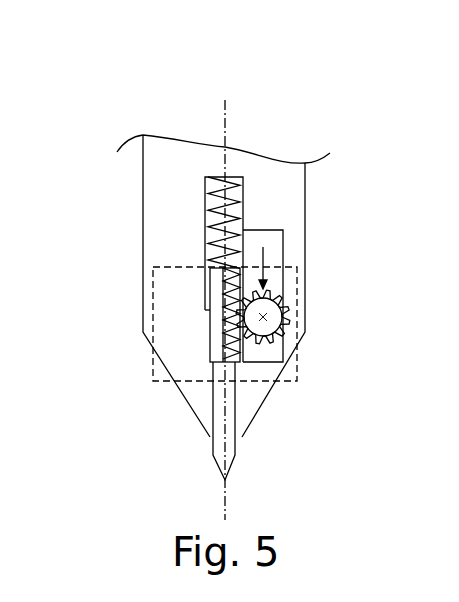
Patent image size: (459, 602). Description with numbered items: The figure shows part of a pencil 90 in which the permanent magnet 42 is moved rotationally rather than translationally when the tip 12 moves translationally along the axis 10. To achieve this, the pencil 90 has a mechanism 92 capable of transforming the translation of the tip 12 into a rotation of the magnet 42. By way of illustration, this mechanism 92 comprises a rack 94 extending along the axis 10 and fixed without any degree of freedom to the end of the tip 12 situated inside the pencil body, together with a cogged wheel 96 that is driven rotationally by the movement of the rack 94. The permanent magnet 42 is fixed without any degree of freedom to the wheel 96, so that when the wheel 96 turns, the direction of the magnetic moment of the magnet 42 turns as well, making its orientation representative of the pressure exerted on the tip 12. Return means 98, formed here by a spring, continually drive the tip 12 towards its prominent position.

The axis 10 is at (225, 112).
The pencil 90 is at (143, 200).
The return means 98 is at (225, 198).
The permanent magnet 42 is at (283, 230).
The rack 94 is at (218, 325).
The cogged wheel 96 is at (266, 315).
The mechanism 92 is at (153, 362).
The tip 12 is at (213, 450).